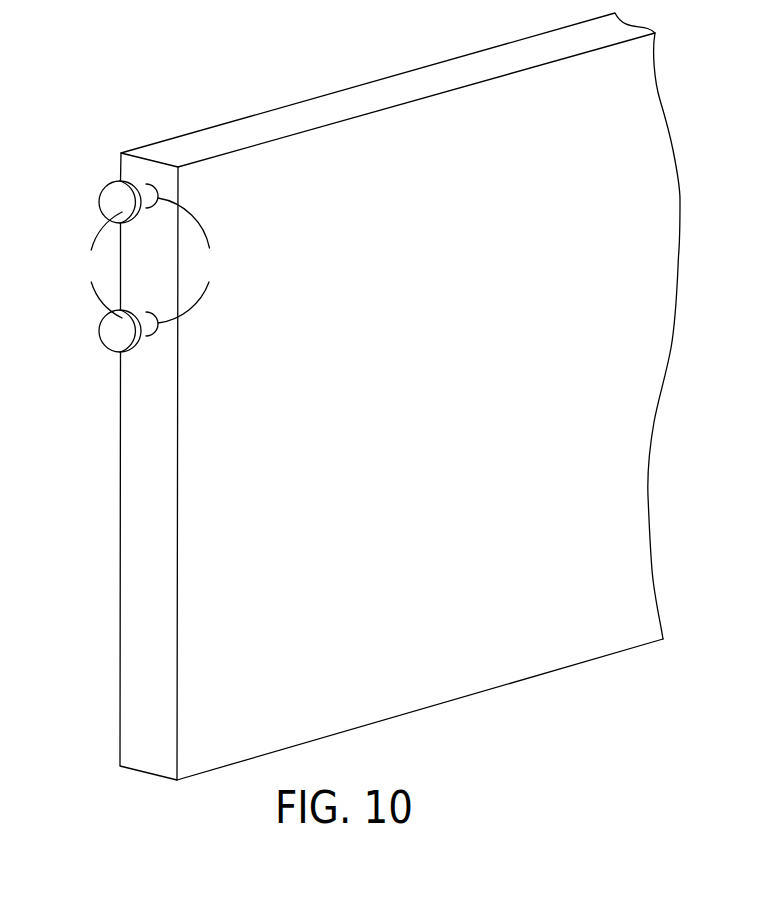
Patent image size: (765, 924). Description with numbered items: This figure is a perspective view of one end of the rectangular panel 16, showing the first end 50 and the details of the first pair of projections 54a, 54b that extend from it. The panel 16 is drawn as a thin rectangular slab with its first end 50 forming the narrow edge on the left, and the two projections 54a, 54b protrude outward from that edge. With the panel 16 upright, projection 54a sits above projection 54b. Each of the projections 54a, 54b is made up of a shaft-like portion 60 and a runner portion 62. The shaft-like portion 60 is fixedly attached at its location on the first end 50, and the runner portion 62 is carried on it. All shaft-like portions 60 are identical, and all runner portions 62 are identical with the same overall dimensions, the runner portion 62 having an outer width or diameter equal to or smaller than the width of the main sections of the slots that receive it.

The panel 16 is at (292, 103).
The first end 50 is at (148, 600).
The projection 54a is at (113, 197).
The projection 54b is at (113, 340).
The shaft-like portion 60 is at (192, 260).
The runner portion 62 is at (100, 265).